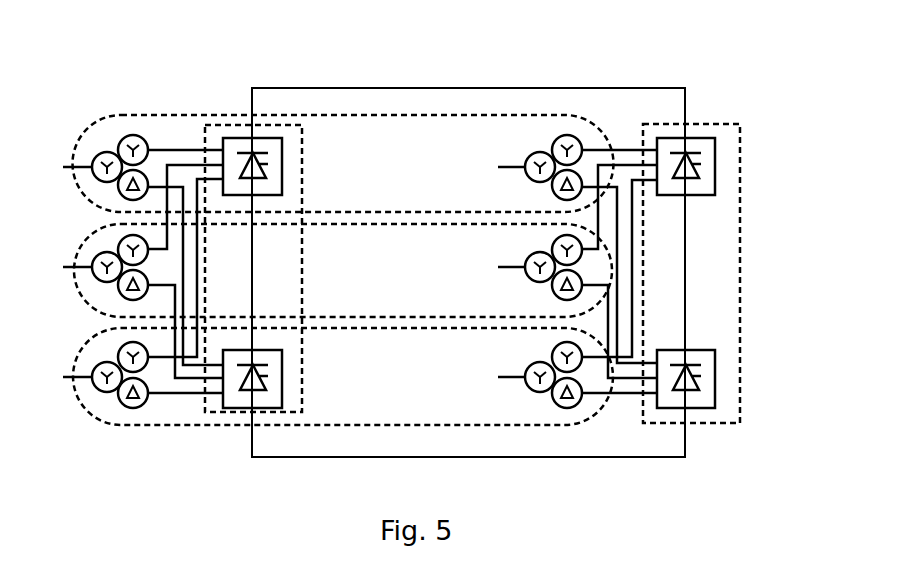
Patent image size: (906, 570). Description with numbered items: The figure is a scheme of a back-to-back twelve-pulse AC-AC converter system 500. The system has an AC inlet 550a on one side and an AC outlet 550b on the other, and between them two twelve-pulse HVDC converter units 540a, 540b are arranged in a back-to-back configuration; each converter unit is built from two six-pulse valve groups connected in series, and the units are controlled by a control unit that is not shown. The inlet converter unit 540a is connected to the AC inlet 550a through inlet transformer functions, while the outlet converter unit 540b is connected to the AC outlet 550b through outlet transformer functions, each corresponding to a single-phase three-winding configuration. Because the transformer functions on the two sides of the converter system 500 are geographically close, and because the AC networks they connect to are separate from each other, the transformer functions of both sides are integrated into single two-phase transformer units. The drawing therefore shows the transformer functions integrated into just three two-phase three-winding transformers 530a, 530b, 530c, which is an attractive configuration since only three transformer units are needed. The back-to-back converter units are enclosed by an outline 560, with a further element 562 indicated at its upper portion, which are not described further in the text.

The back-to-back 12 pulse AC-AC converter system 500 is at (200, 81).
The two-phase three-winding transformer 530a is at (85, 407).
The two-phase three-winding transformer 530b is at (85, 298).
The two-phase three-winding transformer 530c is at (85, 196).
The inlet converter unit 540a is at (302, 169).
The outlet converter unit 540b is at (742, 170).
The AC inlet 550a is at (198, 491).
The AC outlet 550b is at (630, 491).
The DC transmission link 560 is at (366, 460).
The DC line 562 is at (470, 94).